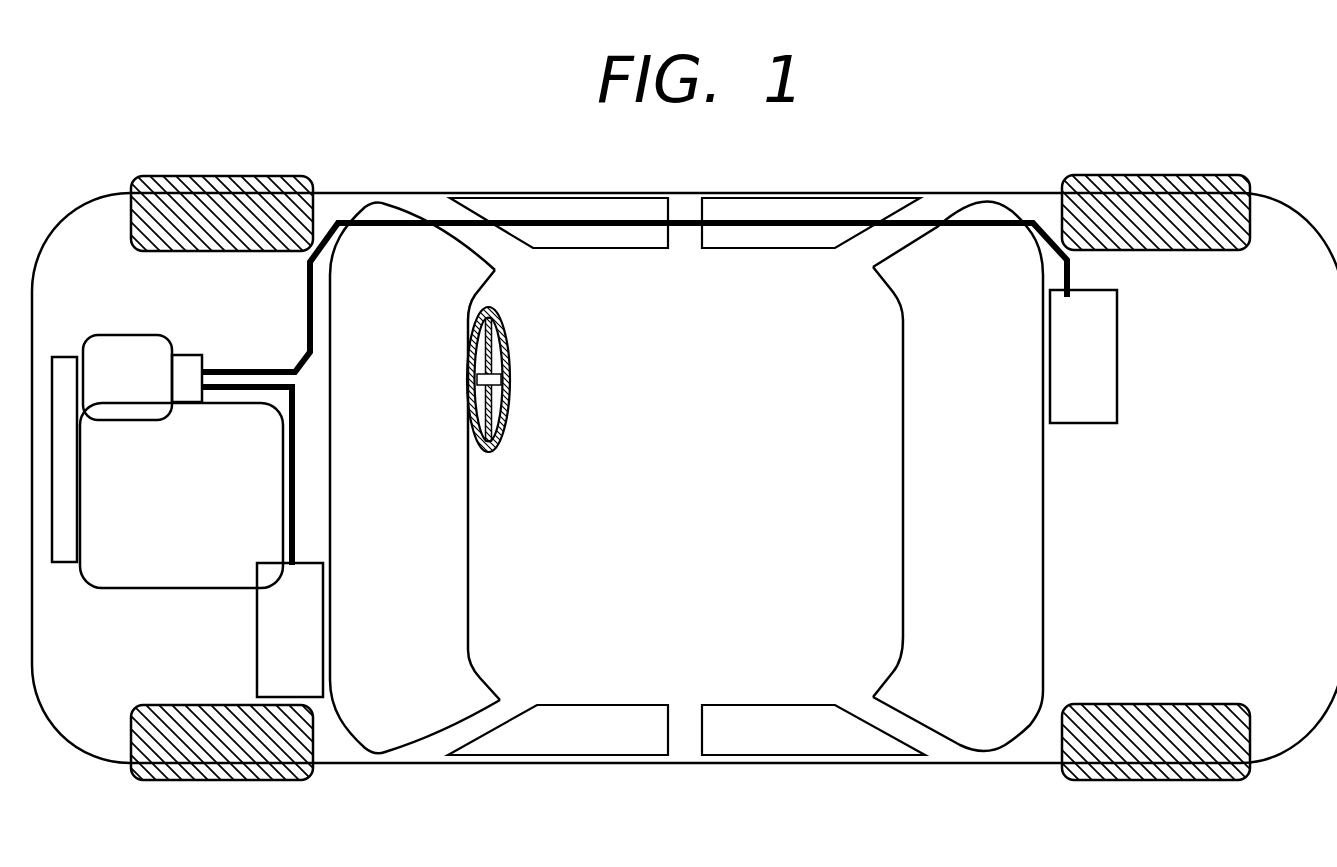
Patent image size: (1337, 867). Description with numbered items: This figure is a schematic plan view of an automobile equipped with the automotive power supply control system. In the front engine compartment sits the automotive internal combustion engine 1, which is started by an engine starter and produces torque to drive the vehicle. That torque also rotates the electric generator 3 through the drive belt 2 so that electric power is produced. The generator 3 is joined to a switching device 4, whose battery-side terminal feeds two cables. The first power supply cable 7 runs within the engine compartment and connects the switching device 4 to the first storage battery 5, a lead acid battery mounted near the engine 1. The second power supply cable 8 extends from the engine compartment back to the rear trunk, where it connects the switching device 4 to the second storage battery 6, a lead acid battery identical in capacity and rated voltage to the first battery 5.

The automotive internal combustion engine 1 is at (163, 590).
The drive belt 2 is at (65, 564).
The electric generator 3 is at (108, 342).
The switching device 4 is at (185, 356).
The first storage battery 5 is at (257, 655).
The second storage battery 6 is at (1117, 392).
The first power supply cable 7 is at (297, 513).
The second power supply cable 8 is at (683, 230).